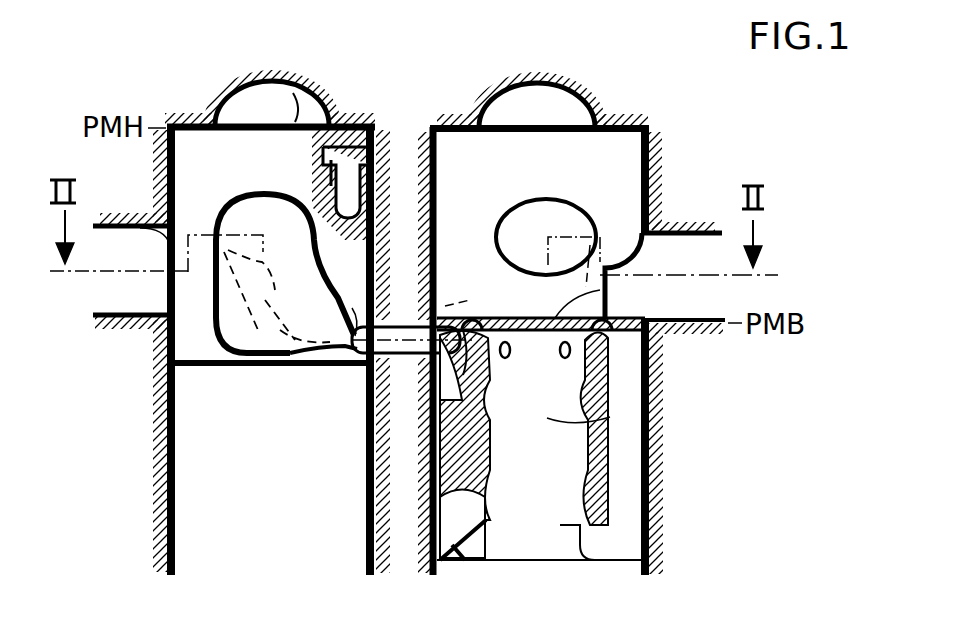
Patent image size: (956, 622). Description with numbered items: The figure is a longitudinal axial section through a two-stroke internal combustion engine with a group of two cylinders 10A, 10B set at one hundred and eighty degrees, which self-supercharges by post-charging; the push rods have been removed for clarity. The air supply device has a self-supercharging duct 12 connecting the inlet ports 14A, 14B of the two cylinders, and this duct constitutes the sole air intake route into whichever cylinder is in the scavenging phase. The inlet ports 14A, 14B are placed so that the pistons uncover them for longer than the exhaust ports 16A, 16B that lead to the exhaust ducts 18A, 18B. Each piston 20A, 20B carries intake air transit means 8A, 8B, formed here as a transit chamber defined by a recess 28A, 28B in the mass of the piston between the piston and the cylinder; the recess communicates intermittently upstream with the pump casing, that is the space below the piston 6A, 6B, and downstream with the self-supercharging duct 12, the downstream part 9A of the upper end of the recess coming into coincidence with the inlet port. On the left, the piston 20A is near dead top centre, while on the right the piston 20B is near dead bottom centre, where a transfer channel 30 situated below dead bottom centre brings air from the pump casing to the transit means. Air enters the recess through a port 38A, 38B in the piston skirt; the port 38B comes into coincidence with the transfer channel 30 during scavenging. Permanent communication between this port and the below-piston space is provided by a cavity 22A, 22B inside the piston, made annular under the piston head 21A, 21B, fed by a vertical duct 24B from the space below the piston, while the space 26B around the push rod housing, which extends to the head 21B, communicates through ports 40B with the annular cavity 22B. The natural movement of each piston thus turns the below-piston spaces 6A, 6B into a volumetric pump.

The space below the piston 6A is at (193, 486).
The space below the piston 6B is at (608, 572).
The intake air transit means 8A is at (293, 325).
The intake air transit means 8B is at (474, 532).
The downstream part of the recess 9A is at (308, 225).
The cylinder 10A is at (385, 153).
The cylinder 10B is at (652, 160).
The self-supercharging duct 12 is at (480, 290).
The inlet port 14A is at (232, 300).
The inlet port 14B is at (566, 192).
The exhaust port 16A is at (148, 226).
The exhaust port 16B is at (672, 226).
The exhaust duct 18A is at (110, 296).
The exhaust duct 18B is at (702, 294).
The piston 20A is at (191, 117).
The piston 20B is at (600, 450).
The head of the piston 21A is at (306, 110).
The head of the piston 21B is at (636, 275).
The cavity 22A is at (345, 197).
The annular cavity 22B is at (488, 388).
The vertical duct 24B is at (620, 503).
The space about the housing of the push rod 26B is at (610, 417).
The recess 28A is at (347, 358).
The recess 28B is at (472, 537).
The transfer channel 30 is at (415, 323).
The port 38A is at (386, 152).
The port 38B is at (501, 256).
The ports 40B is at (560, 356).